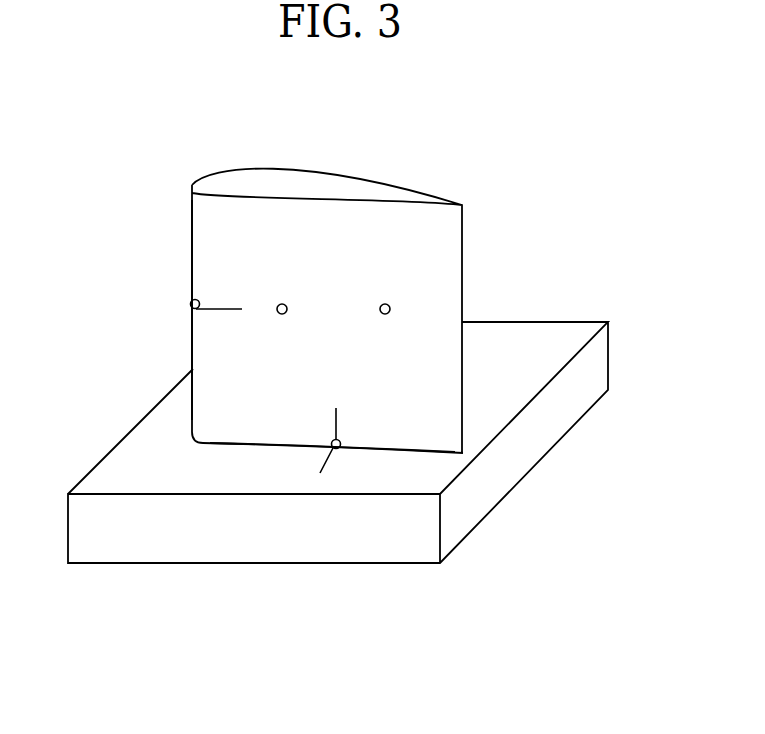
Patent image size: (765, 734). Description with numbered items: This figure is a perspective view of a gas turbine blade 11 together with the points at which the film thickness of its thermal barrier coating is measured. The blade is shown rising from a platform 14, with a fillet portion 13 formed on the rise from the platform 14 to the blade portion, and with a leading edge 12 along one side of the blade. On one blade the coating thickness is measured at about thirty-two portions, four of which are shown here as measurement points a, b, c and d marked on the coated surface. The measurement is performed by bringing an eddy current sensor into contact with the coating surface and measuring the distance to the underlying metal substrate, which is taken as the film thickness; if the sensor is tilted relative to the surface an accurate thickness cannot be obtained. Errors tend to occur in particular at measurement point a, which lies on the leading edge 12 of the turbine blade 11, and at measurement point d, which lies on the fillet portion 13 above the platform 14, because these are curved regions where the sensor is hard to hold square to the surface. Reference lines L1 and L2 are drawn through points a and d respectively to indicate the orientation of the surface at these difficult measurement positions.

The turbine blade 11 is at (421, 146).
The leading edge 12 is at (190, 238).
The fillet portion 13 is at (230, 447).
The platform 14 is at (546, 337).
The measurement point a is at (200, 301).
The measurement point b is at (287, 304).
The measurement point c is at (390, 304).
The measurement point d is at (340, 439).
The reference line L1 is at (205, 312).
The reference line L2 is at (333, 463).